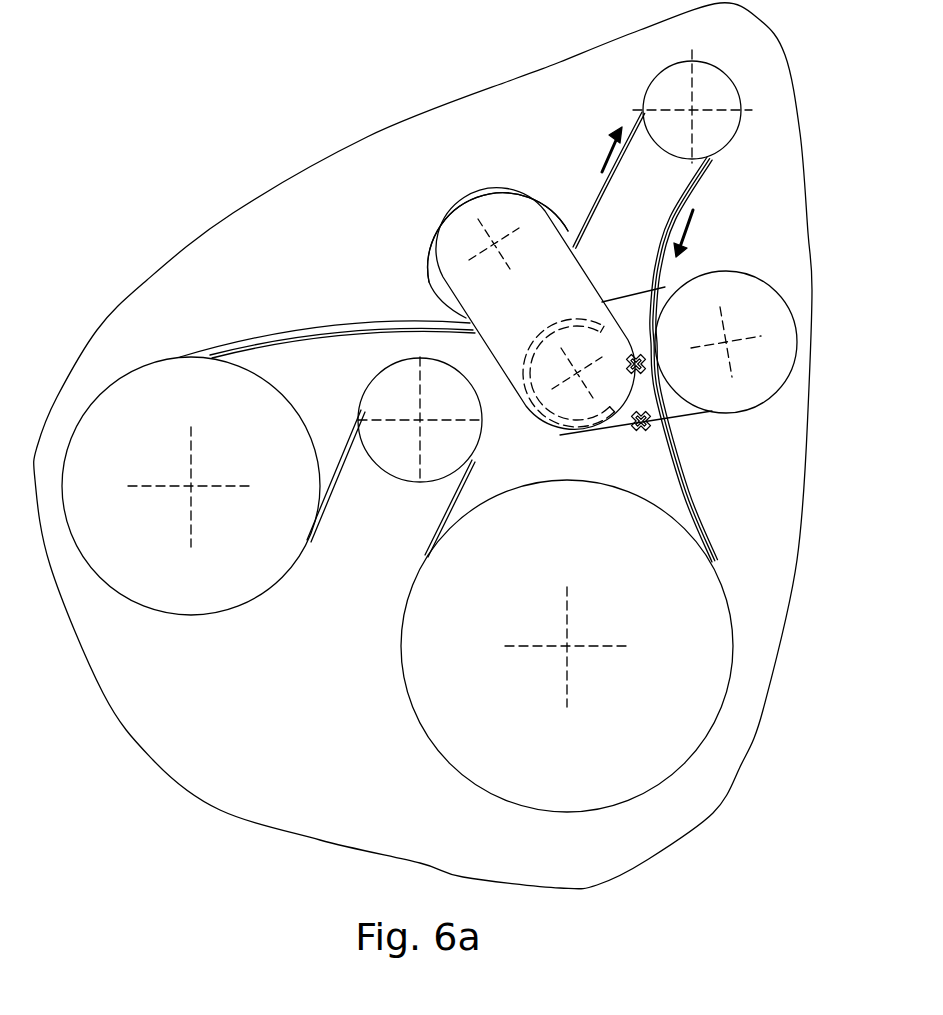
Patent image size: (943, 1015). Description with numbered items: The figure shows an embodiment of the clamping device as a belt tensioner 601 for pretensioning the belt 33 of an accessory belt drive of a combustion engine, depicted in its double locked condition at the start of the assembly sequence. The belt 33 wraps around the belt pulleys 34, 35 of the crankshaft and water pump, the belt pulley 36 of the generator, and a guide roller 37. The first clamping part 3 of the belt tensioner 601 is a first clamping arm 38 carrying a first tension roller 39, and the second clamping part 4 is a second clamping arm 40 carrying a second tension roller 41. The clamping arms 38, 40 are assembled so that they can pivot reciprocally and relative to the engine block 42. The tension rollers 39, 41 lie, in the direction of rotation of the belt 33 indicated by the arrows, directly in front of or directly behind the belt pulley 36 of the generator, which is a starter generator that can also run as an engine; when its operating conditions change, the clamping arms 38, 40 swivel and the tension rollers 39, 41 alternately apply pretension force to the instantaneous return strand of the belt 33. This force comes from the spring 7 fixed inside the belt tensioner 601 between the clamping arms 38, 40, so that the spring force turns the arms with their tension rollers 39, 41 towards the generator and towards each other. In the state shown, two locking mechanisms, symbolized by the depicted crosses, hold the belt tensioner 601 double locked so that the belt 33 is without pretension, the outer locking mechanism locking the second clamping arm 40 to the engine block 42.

The first clamping part 3 is at (465, 160).
The second clamping part 4 is at (705, 267).
The spring 7 is at (540, 418).
The belt 33 is at (255, 340).
The belt pulley 34 is at (422, 723).
The belt pulley 35 is at (193, 602).
The belt pulley of the generator 36 is at (665, 88).
The guide roller 37 is at (398, 466).
The first clamping arm 38 is at (500, 185).
The first tension roller 39 is at (527, 173).
The second clamping arm 40 is at (682, 412).
The second tension roller 41 is at (750, 273).
The engine block 42 is at (608, 477).
The belt tensioner 601 is at (415, 245).